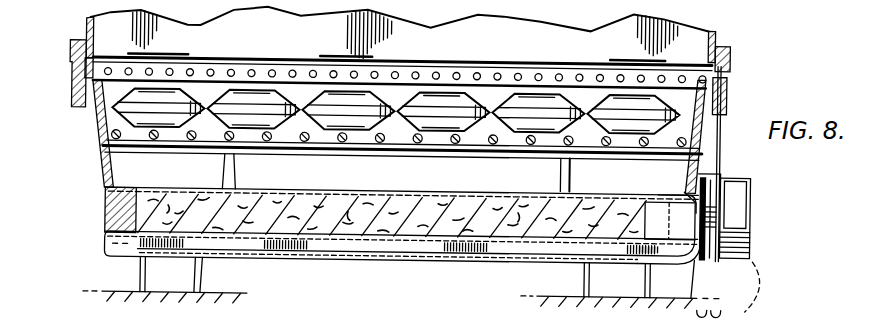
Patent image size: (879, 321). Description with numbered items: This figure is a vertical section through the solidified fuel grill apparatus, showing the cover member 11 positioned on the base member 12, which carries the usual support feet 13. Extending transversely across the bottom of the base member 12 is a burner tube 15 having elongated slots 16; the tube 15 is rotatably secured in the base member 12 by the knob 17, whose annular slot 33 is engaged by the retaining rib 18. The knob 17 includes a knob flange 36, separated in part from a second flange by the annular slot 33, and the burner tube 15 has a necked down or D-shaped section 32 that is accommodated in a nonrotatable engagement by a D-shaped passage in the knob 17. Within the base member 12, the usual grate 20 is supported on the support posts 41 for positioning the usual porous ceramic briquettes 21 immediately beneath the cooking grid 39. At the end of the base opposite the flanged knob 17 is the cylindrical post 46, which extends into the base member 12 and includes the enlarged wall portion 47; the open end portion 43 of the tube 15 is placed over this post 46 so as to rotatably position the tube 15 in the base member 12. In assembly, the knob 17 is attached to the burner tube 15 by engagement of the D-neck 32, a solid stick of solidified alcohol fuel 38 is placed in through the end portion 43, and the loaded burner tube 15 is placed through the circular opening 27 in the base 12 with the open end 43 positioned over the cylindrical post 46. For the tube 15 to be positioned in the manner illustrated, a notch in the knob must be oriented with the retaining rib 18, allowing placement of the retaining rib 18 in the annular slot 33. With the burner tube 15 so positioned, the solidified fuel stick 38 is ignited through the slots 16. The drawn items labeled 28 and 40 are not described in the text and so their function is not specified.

The cover member 11 is at (732, 55).
The base member 12 is at (728, 97).
The support feet 13 is at (150, 279).
The burner tube 15 is at (104, 178).
The slots 16 is at (368, 193).
The knob 17 is at (742, 189).
The retaining rib 18 is at (715, 152).
The grate 20 is at (108, 145).
The porous ceramic briquettes 21 is at (118, 112).
The circular opening 27 is at (678, 196).
The pin 28 is at (687, 192).
The D-shaped section 32 is at (669, 250).
The annular slot 33 is at (713, 258).
The knob flange 36 is at (728, 289).
The solid alcohol fuel 38 is at (416, 193).
The cooking grid 39 is at (236, 71).
The clamp 40 is at (70, 88).
The support posts 41 is at (223, 173).
The end portion 43 is at (110, 239).
The cylindrical post 46 is at (108, 211).
The enlarged wall portion 47 is at (112, 188).